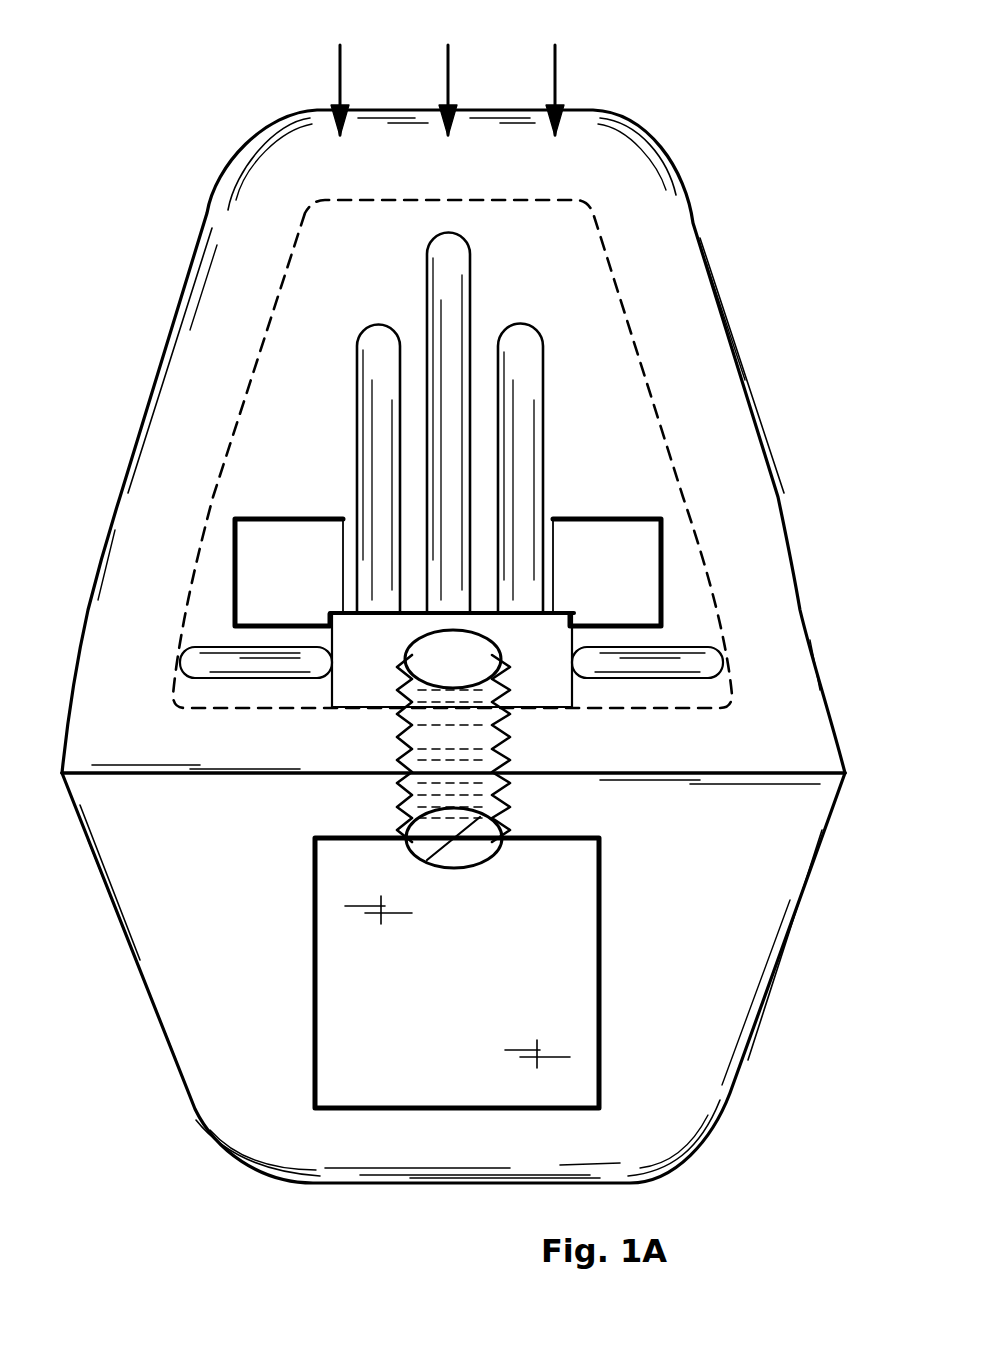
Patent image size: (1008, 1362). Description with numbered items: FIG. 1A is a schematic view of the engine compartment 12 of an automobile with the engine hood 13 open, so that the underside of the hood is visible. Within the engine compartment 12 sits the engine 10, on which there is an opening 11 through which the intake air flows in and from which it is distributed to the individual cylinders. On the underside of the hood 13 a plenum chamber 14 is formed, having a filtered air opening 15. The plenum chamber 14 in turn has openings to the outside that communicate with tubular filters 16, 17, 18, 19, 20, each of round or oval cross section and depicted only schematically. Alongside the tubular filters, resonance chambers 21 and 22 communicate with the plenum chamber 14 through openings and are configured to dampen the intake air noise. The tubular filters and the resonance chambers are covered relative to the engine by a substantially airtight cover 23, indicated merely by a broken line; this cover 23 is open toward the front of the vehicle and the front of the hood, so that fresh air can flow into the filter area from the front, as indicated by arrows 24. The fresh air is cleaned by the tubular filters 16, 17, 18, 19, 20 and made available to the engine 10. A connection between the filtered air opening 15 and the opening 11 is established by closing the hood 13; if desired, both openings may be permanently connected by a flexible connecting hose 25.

The engine 10 is at (400, 1090).
The opening 11 is at (483, 840).
The engine compartment 12 is at (176, 967).
The engine hood 13 is at (150, 499).
The plenum chamber 14 is at (543, 680).
The filtered air opening 15 is at (420, 643).
The tubular filter 16 is at (703, 663).
The tubular filter 17 is at (518, 383).
The tubular filter 18 is at (445, 267).
The tubular filter 19 is at (375, 375).
The tubular filter 20 is at (182, 660).
The resonance chamber 21 is at (611, 547).
The resonance chamber 22 is at (288, 550).
The cover 23 is at (648, 377).
The arrows 24 is at (338, 72).
The flexible connecting hose 25 is at (397, 797).